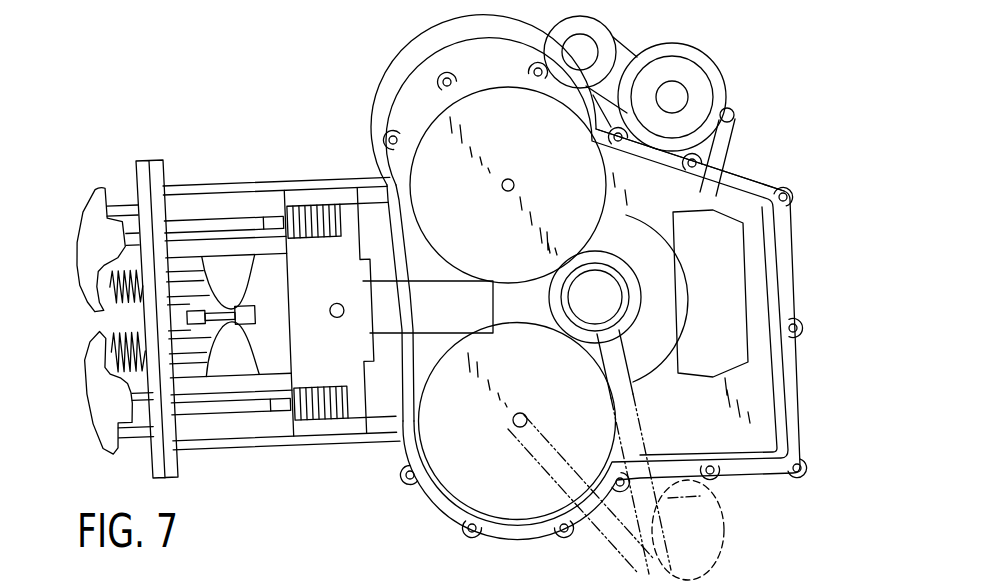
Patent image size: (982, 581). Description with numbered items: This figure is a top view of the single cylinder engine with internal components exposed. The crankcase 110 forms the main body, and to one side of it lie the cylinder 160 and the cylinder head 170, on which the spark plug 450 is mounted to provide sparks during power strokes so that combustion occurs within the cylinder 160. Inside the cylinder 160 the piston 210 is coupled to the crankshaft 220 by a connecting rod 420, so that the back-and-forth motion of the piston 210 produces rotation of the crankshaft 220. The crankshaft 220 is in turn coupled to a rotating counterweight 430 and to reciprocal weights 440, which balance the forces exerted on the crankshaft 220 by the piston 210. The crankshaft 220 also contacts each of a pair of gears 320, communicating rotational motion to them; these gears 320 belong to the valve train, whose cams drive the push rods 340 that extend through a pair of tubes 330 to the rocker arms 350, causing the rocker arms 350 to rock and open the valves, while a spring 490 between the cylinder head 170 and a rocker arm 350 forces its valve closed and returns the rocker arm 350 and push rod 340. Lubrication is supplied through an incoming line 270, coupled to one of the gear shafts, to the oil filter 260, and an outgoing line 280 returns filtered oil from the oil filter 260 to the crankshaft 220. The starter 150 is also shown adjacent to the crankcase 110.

The crankcase 110 is at (740, 176).
The starter 150 is at (697, 43).
The cylinder 160 is at (297, 210).
The cylinder head 170 is at (258, 273).
The piston 210 is at (349, 243).
The crankshaft 220 is at (632, 322).
The oil filter 260 is at (725, 540).
The incoming line 270 is at (602, 517).
The outgoing line 280 is at (700, 496).
The gears 320 is at (488, 85).
The tubes 330 is at (221, 185).
The push rods 340 is at (368, 190).
The rocker arms 350 is at (88, 222).
The connecting rod 420 is at (383, 333).
The rotating counterweight 430 is at (632, 210).
The reciprocal weights 440 is at (745, 200).
The spark plug 450 is at (187, 315).
The spring 490 is at (110, 312).